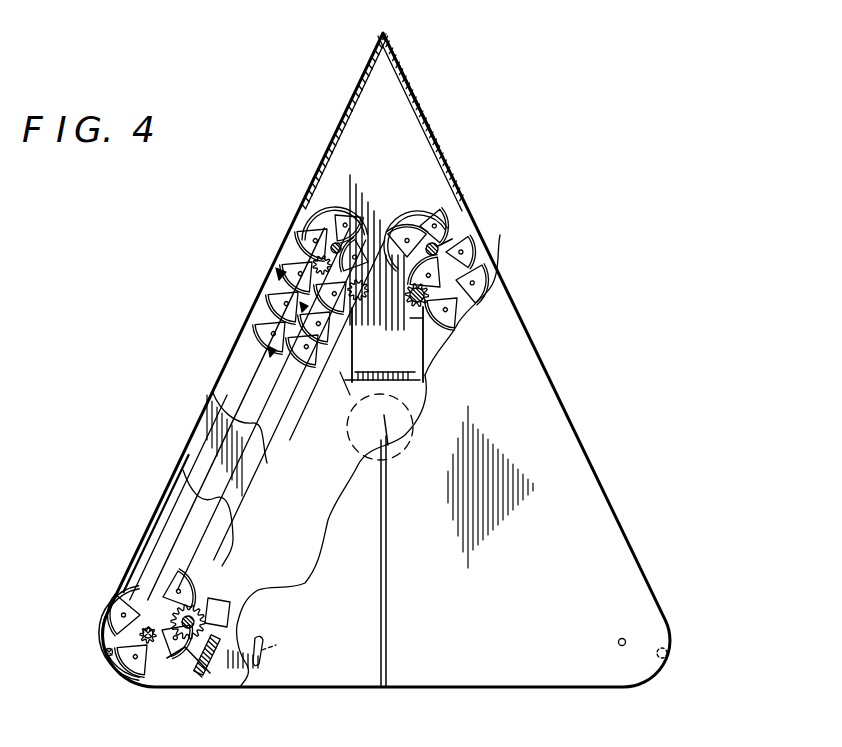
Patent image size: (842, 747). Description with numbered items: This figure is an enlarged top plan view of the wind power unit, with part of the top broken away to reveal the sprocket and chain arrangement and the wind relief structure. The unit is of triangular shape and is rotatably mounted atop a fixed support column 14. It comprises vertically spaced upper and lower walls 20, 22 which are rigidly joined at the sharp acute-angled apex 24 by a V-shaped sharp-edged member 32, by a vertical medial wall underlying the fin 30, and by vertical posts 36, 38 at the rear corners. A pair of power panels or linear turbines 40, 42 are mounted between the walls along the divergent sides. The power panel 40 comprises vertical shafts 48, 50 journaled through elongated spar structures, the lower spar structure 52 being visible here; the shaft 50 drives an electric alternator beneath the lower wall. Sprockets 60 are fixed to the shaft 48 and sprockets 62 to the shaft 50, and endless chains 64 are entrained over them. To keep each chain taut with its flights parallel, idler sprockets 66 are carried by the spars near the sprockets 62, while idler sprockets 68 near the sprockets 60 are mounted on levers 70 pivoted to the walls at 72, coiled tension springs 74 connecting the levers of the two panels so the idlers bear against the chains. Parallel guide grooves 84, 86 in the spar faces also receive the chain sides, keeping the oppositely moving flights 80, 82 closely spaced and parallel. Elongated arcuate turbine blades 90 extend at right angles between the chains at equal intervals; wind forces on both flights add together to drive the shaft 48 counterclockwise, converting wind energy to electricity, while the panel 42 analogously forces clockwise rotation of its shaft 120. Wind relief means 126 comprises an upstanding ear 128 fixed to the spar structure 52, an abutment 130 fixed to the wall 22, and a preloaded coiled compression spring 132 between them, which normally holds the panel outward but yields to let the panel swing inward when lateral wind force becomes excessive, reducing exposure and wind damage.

The fixed support column 14 is at (410, 403).
The upper wall 20 is at (513, 325).
The lower wall 22 is at (413, 143).
The apex 24 is at (383, 32).
The fin 30 is at (389, 650).
The V-shaped wall 32 is at (405, 73).
The vertical post 36 is at (108, 656).
The vertical post 38 is at (668, 652).
The power panel 40 is at (262, 258).
The power panel 42 is at (482, 265).
The vertical shaft 48 is at (320, 213).
The vertical shaft 50 is at (130, 563).
The lower spar structure 52 is at (252, 410).
The sprockets 60 is at (345, 215).
The sprockets 62 is at (157, 670).
The endless chains 64 is at (267, 317).
The idler sprockets 66 is at (190, 630).
The idler sprockets 68 is at (382, 364).
The levers 70 is at (342, 377).
The pivot 72 is at (350, 358).
The coiled tension springs 74 is at (388, 438).
The chain flight 80 is at (253, 350).
The chain flight 82 is at (345, 385).
The guide groove 84 is at (160, 552).
The guide groove 86 is at (172, 527).
The turbine blades 90 is at (387, 227).
The shaft 120 is at (452, 237).
The yielding urging means 126 is at (197, 672).
The upstanding ear 128 is at (232, 620).
The abutment 130 is at (265, 657).
The coiled compression spring 132 is at (245, 638).